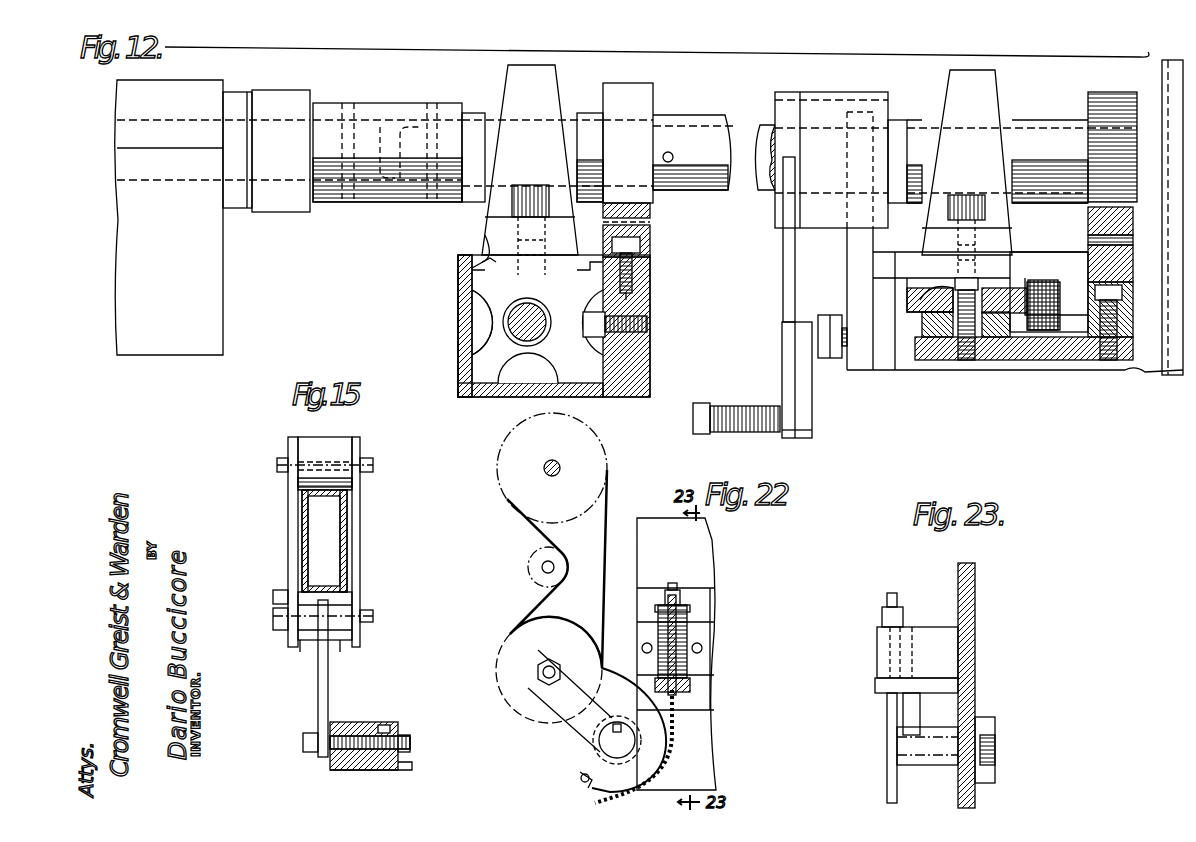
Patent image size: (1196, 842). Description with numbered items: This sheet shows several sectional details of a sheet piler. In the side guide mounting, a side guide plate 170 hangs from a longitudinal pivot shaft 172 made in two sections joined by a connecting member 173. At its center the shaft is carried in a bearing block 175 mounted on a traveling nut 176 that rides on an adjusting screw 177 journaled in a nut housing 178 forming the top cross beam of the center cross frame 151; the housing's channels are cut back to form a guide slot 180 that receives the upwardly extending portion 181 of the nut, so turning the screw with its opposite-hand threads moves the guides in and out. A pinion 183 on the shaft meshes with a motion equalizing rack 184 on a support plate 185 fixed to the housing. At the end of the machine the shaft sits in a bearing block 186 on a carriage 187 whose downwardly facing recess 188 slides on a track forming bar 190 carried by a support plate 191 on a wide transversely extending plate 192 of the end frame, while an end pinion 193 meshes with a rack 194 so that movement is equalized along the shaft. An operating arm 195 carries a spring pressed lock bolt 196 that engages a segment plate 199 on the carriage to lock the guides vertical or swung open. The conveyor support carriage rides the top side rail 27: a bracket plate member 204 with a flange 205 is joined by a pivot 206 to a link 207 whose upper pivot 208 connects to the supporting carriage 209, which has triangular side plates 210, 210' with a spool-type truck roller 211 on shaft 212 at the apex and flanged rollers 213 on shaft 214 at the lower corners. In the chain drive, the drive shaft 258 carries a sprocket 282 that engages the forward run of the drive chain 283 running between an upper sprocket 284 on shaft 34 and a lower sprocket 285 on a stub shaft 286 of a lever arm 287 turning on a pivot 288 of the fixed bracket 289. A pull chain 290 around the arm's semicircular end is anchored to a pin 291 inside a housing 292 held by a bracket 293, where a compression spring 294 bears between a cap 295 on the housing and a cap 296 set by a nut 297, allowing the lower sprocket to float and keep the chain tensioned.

In FIG. 12, the side guide plate 170 is at (215, 262).
In FIG. 12, the pivot shaft 172 is at (278, 128).
In FIG. 12, the connecting member 173 is at (369, 202).
In FIG. 12, the bearing block 175 is at (518, 87).
In FIG. 12, the traveling nut 176 is at (472, 288).
In FIG. 12, the adjusting screw 177 is at (515, 340).
In FIG. 12, the nut housing 178 is at (463, 323).
In FIG. 12, the guide slot 180 is at (485, 245).
In FIG. 12, the upwardly extending portion 181 is at (472, 268).
In FIG. 12, the pinion 183 is at (652, 212).
In FIG. 12, the motion equalizing rack 184 is at (652, 248).
In FIG. 12, the support plate 185 is at (652, 342).
In FIG. 12, the center cross frame 151 is at (652, 368).
In FIG. 12, the bearing block 186 is at (990, 92).
In FIG. 12, the carriage 187 is at (1018, 265).
In FIG. 12, the recess 188 is at (912, 290).
In FIG. 12, the track forming bar 190 is at (992, 360).
In FIG. 12, the support plate 191 is at (935, 337).
In FIG. 12, the transversely extending plate 192 is at (1073, 360).
In FIG. 12, the pinion 193 is at (1120, 92).
In FIG. 12, the rack 194 is at (1093, 252).
In FIG. 12, the operating arm 195 is at (783, 307).
In FIG. 12, the spring pressed lock bolt 196 is at (742, 406).
In FIG. 12, the segment plate 199 is at (812, 388).
In FIG. 15, the top side rail 27 is at (347, 555).
In FIG. 15, the bracket plate member 204 is at (400, 770).
In FIG. 15, the flange 205 is at (395, 722).
In FIG. 15, the pivot 206 is at (303, 742).
In FIG. 15, the link 207 is at (328, 675).
In FIG. 15, the pivot 208 is at (352, 605).
In FIG. 15, the supporting carriage 209 is at (360, 503).
In FIG. 15, the side plate 210 is at (270, 542).
In FIG. 15, the side plate 210' is at (384, 542).
In FIG. 15, the spool-type truck roller 211 is at (327, 437).
In FIG. 15, the shaft 212 is at (373, 465).
In FIG. 15, the flanged rollers 213 is at (340, 635).
In FIG. 15, the shaft 214 is at (373, 616).
In FIG. 22, the shaft 34 is at (544, 464).
In FIG. 22, the drive shaft 258 is at (545, 572).
In FIG. 22, the sprocket 282 is at (530, 560).
In FIG. 22, the drive chain 283 is at (527, 522).
In FIG. 22, the upper sprocket 284 is at (603, 466).
In FIG. 22, the lower sprocket 285 is at (508, 712).
In FIG. 23, the lower sprocket 285 is at (920, 703).
In FIG. 22, the stub shaft 286 is at (536, 675).
In FIG. 22, the lever arm 287 is at (580, 740).
In FIG. 22, the pivot 288 is at (605, 752).
In FIG. 23, the pivot 288 is at (923, 765).
In FIG. 22, the bracket 289 is at (735, 740).
In FIG. 23, the bracket 289 is at (975, 660).
In FIG. 22, the pull chain 290 is at (588, 790).
In FIG. 22, the pin 291 is at (687, 640).
In FIG. 22, the housing 292 is at (702, 648).
In FIG. 23, the bracket 293 is at (932, 627).
In FIG. 22, the compression spring 294 is at (676, 625).
In FIG. 22, the cap 295 is at (690, 690).
In FIG. 22, the cap 296 is at (690, 608).
In FIG. 22, the nut 297 is at (680, 594).